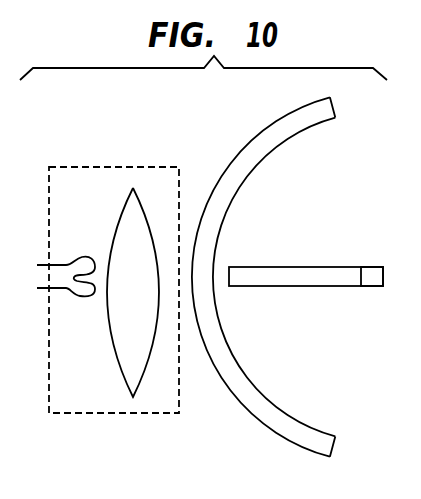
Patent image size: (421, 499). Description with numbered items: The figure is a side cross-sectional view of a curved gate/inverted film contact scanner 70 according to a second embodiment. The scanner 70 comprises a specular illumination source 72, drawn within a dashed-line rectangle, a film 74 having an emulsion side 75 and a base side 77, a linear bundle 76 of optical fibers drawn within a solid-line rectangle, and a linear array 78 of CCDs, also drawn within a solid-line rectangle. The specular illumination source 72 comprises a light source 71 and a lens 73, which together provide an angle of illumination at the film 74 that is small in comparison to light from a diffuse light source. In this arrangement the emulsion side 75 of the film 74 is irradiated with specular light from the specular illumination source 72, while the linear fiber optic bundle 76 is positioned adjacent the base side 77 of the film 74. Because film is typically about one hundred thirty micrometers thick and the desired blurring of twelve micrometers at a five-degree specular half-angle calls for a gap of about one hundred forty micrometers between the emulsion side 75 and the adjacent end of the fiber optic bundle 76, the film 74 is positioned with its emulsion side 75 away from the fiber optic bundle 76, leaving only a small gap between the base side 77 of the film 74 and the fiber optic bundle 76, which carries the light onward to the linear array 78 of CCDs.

The curved gate/inverted film contact scanner 70 is at (132, 100).
The light source 71 is at (66, 262).
The specular illumination source 72 is at (128, 166).
The lens 73 is at (133, 235).
The film 74 is at (263, 271).
The emulsion side 75 is at (265, 424).
The linear bundle of optical fibers 76 is at (306, 279).
The base side 77 is at (266, 397).
The linear array of CCDs 78 is at (372, 285).